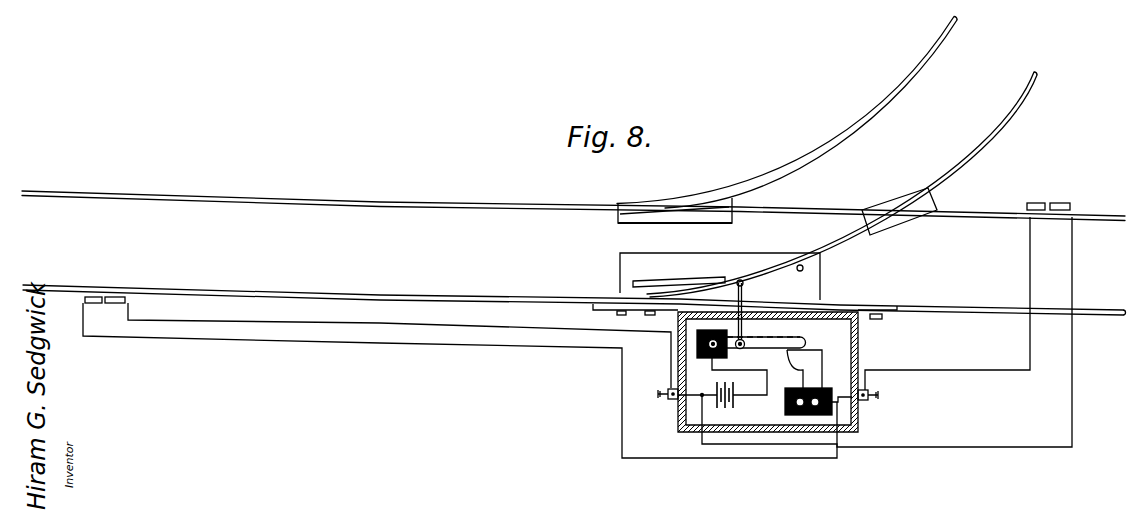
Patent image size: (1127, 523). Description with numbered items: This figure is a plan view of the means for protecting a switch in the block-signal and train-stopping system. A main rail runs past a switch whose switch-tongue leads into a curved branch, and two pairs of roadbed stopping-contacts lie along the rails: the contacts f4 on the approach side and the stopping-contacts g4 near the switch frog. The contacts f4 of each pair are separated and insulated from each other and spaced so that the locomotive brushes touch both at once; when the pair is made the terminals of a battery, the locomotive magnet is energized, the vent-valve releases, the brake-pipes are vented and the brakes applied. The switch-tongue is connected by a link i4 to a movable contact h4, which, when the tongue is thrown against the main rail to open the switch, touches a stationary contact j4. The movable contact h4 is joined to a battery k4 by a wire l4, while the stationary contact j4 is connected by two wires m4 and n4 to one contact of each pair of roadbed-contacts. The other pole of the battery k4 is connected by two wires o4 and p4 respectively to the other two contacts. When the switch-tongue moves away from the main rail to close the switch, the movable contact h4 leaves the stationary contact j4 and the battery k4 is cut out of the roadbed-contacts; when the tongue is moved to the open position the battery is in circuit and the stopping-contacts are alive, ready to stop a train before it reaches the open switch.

The contacts f4 is at (123, 297).
The stopping-contacts g4 is at (1045, 196).
The wire o4 is at (399, 345).
The wire n4 is at (817, 467).
The battery k4 is at (718, 383).
The wire l4 is at (762, 395).
The movable contact h4 is at (787, 348).
The link i4 is at (747, 294).
The stationary contact j4 is at (812, 363).
The wire m4 is at (932, 371).
The wire p4 is at (887, 332).